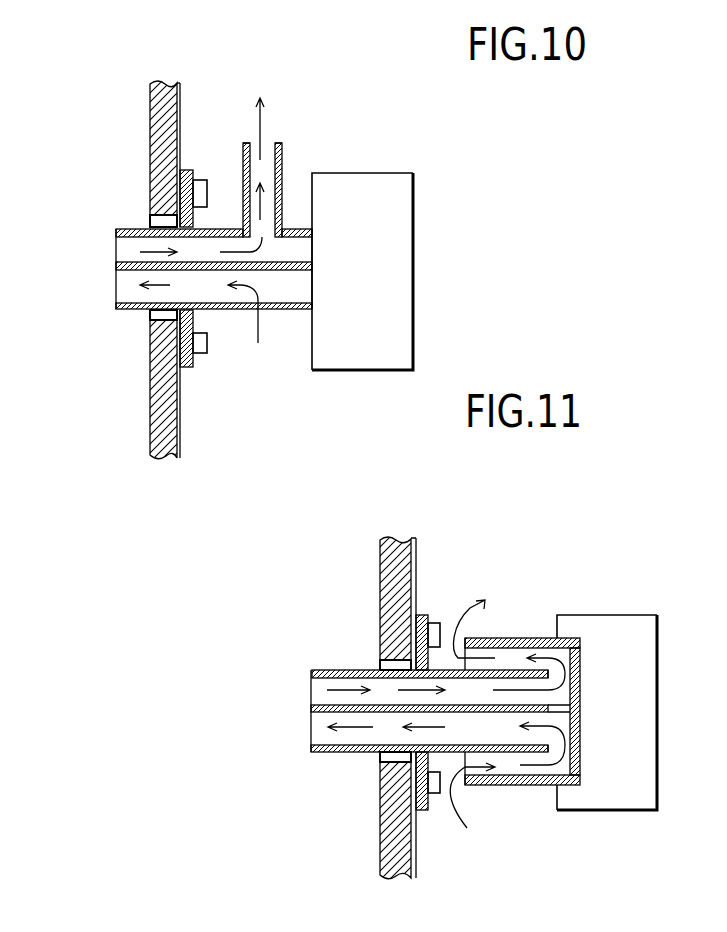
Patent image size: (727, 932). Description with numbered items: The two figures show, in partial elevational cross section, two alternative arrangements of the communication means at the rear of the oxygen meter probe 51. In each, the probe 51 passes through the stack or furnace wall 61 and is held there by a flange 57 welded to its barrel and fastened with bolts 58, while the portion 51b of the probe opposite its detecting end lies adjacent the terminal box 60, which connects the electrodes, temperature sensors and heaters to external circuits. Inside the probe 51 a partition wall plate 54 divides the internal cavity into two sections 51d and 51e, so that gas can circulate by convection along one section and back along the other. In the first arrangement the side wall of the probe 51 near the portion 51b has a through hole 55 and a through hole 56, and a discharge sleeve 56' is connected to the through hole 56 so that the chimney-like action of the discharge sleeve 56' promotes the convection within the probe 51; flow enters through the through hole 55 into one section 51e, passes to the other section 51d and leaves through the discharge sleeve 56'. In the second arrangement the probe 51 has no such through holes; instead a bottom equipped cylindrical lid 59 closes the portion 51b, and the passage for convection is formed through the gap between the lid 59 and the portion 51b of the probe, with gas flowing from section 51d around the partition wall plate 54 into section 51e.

In FIG. 10, the probe 51 is at (133, 229).
In FIG. 11, the probe 51 is at (357, 670).
In FIG. 10, the portion of probe opposite to the end 51b is at (312, 280).
In FIG. 11, the portion of probe opposite to the end 51b is at (550, 724).
In FIG. 10, the first section of internal cavity 51d is at (125, 252).
In FIG. 11, the first section of internal cavity 51d is at (320, 683).
In FIG. 10, the second section of internal cavity 51e is at (135, 292).
In FIG. 11, the second section of internal cavity 51e is at (365, 737).
In FIG. 10, the partition wall plate 54 is at (128, 271).
In FIG. 11, the partition wall plate 54 is at (325, 710).
In FIG. 10, the through hole 55 is at (250, 308).
In FIG. 10, the through hole 56 is at (289, 171).
In FIG. 10, the discharge sleeve 56' is at (286, 102).
In FIG. 10, the flange 57 is at (186, 170).
In FIG. 11, the flange 57 is at (421, 615).
In FIG. 10, the bolts 58 is at (198, 178).
In FIG. 11, the bolts 58 is at (433, 623).
In FIG. 11, the bottom equipped cylindrical lid 59 is at (517, 638).
In FIG. 10, the terminal box 60 is at (373, 173).
In FIG. 11, the terminal box 60 is at (600, 615).
In FIG. 10, the stack or furnace wall 61 is at (150, 140).